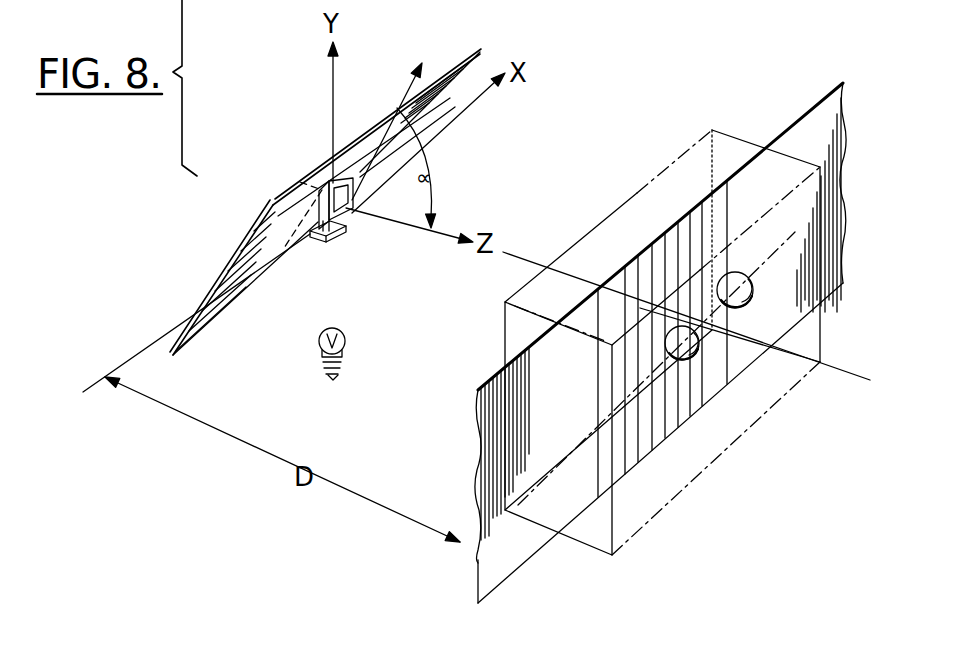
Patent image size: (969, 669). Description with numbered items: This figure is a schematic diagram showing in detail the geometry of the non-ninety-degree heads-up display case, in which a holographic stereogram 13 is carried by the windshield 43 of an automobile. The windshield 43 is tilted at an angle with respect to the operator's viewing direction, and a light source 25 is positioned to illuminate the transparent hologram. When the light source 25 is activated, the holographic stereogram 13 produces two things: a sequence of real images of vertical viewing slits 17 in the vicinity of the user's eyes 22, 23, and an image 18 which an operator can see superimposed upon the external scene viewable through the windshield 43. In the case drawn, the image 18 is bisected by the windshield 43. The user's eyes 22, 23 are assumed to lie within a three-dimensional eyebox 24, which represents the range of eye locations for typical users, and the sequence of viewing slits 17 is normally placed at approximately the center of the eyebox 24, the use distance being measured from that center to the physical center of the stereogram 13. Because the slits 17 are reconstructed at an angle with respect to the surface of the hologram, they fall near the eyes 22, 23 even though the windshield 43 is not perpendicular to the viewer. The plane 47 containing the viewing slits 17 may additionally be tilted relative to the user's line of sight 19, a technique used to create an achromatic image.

The holographic stereogram 13 is at (285, 247).
The vertical viewing slits 17 is at (613, 287).
The image 18 is at (347, 233).
The line of sight 19 is at (837, 368).
The eye 22 is at (752, 273).
The eye 23 is at (683, 362).
The eyebox 24 is at (660, 527).
The light source 25 is at (318, 354).
The windshield 43 is at (288, 197).
The plane 47 is at (510, 548).